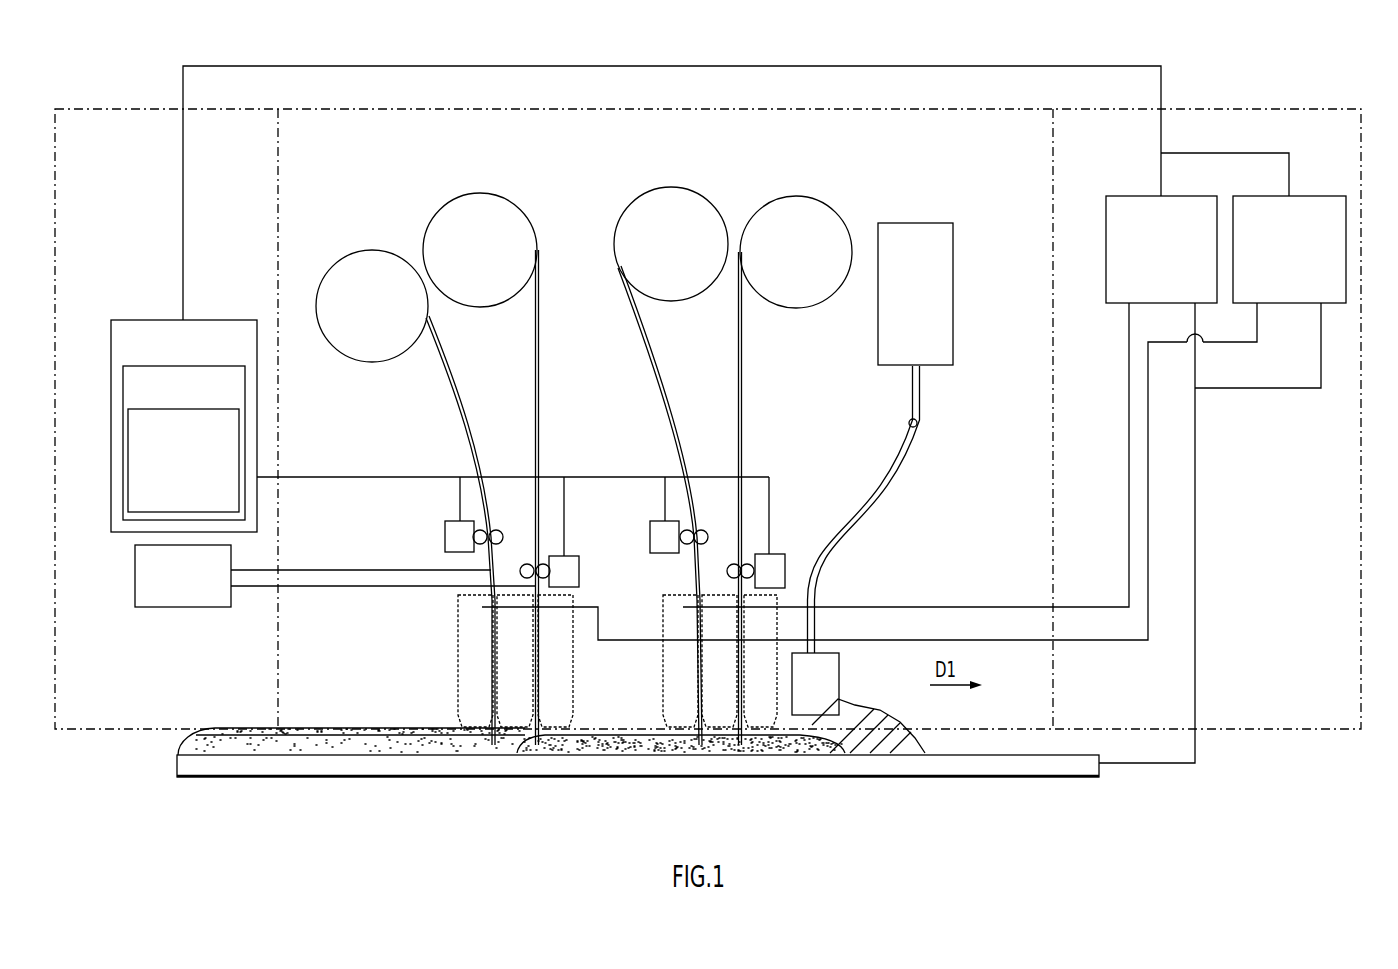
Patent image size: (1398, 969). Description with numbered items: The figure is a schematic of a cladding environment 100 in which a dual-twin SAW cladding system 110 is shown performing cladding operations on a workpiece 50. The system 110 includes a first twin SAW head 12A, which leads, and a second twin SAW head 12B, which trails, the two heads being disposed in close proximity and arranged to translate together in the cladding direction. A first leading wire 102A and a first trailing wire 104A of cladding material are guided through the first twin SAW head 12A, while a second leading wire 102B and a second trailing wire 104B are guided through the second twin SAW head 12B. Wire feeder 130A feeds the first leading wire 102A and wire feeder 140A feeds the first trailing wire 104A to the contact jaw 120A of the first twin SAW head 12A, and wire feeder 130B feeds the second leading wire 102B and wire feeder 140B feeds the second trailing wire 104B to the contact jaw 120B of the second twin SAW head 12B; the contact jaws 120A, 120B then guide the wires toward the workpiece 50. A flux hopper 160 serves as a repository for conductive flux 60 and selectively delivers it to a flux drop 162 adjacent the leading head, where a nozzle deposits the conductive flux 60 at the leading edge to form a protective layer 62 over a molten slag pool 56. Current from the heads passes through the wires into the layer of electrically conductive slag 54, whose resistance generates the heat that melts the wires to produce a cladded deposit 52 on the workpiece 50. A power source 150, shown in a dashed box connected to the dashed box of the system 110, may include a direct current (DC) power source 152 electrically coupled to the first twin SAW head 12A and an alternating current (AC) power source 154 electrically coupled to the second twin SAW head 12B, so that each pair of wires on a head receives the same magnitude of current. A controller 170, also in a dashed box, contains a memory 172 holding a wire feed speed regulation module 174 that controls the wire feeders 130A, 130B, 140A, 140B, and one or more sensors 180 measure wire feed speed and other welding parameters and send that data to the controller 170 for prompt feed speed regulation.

The cladding environment 100 is at (110, 66).
The dual-twin SAW cladding system 110 is at (872, 145).
The power source 150 is at (937, 404).
The direct current (DC) power source 152 is at (1174, 265).
The alternating current (AC) power source 154 is at (1303, 265).
The flux hopper 160 is at (960, 254).
The conductive flux 60 is at (918, 425).
The flux drop 162 is at (839, 668).
The controller 170 is at (111, 337).
The memory 172 is at (122, 502).
The wire feed speed regulation module 174 is at (128, 445).
The sensors 180 is at (173, 607).
The first leading wire 102A is at (813, 265).
The second leading wire 102B is at (499, 262).
The first trailing wire 104A is at (688, 255).
The second trailing wire 104B is at (389, 317).
The wire feeder 130A is at (778, 554).
The wire feeder 130B is at (572, 556).
The wire feeder 140A is at (650, 537).
The wire feeder 140B is at (445, 542).
The first twin SAW head 12A is at (722, 704).
The second twin SAW head 12B is at (478, 661).
The contact jaw 120A is at (717, 713).
The contact jaw 120B is at (512, 693).
The workpiece 50 is at (223, 777).
The cladded deposit 52 is at (351, 747).
The electrically conductive slag 54 is at (360, 728).
The molten slag pool 56 is at (596, 745).
The protective layer 62 is at (878, 745).